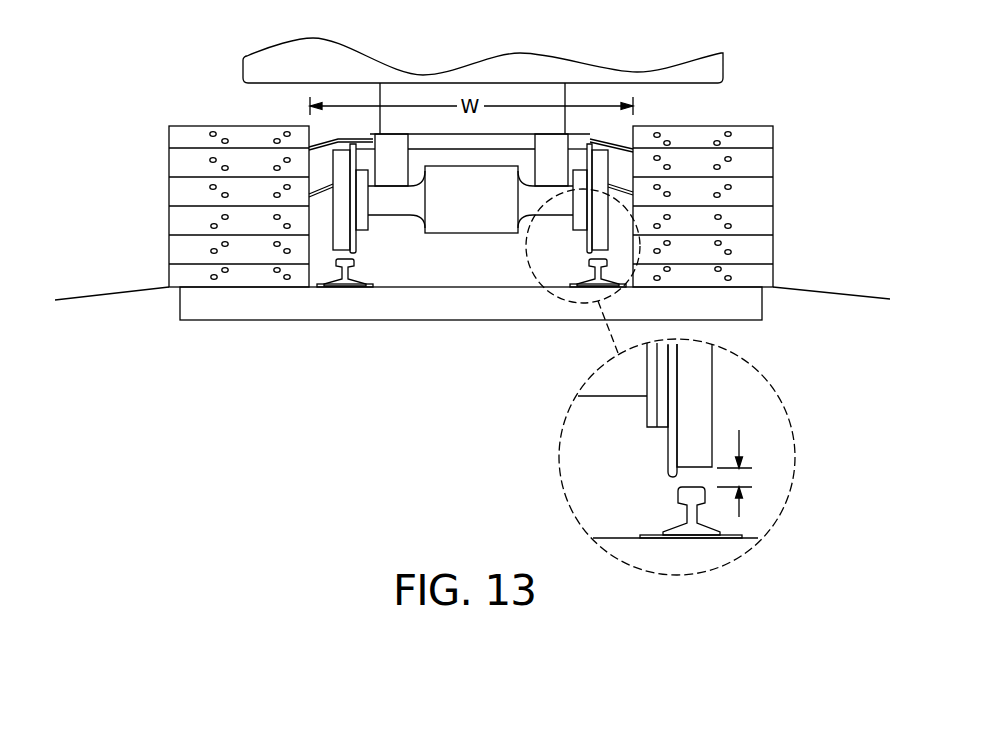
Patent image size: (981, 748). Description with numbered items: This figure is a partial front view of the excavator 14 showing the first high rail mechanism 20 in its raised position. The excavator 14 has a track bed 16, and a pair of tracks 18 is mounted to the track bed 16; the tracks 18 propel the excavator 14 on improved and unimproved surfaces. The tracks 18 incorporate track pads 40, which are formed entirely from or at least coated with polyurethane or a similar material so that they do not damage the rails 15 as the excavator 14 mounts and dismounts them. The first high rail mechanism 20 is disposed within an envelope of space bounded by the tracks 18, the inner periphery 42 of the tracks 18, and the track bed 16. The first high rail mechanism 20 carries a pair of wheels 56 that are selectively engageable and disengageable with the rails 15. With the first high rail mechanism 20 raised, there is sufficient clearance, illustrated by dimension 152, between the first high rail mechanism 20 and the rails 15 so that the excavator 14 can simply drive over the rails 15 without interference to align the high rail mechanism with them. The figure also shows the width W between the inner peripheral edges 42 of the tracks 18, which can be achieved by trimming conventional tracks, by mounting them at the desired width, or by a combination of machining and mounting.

The excavator 14 is at (747, 81).
The track bed 16 is at (577, 135).
The inner periphery 42 is at (313, 138).
The track pads 40 is at (177, 167).
The tracks 18 is at (169, 226).
The first high rail mechanism 20 is at (322, 264).
The rails 15 is at (354, 268).
The wheels 56 is at (700, 407).
The dimension 152 is at (744, 512).